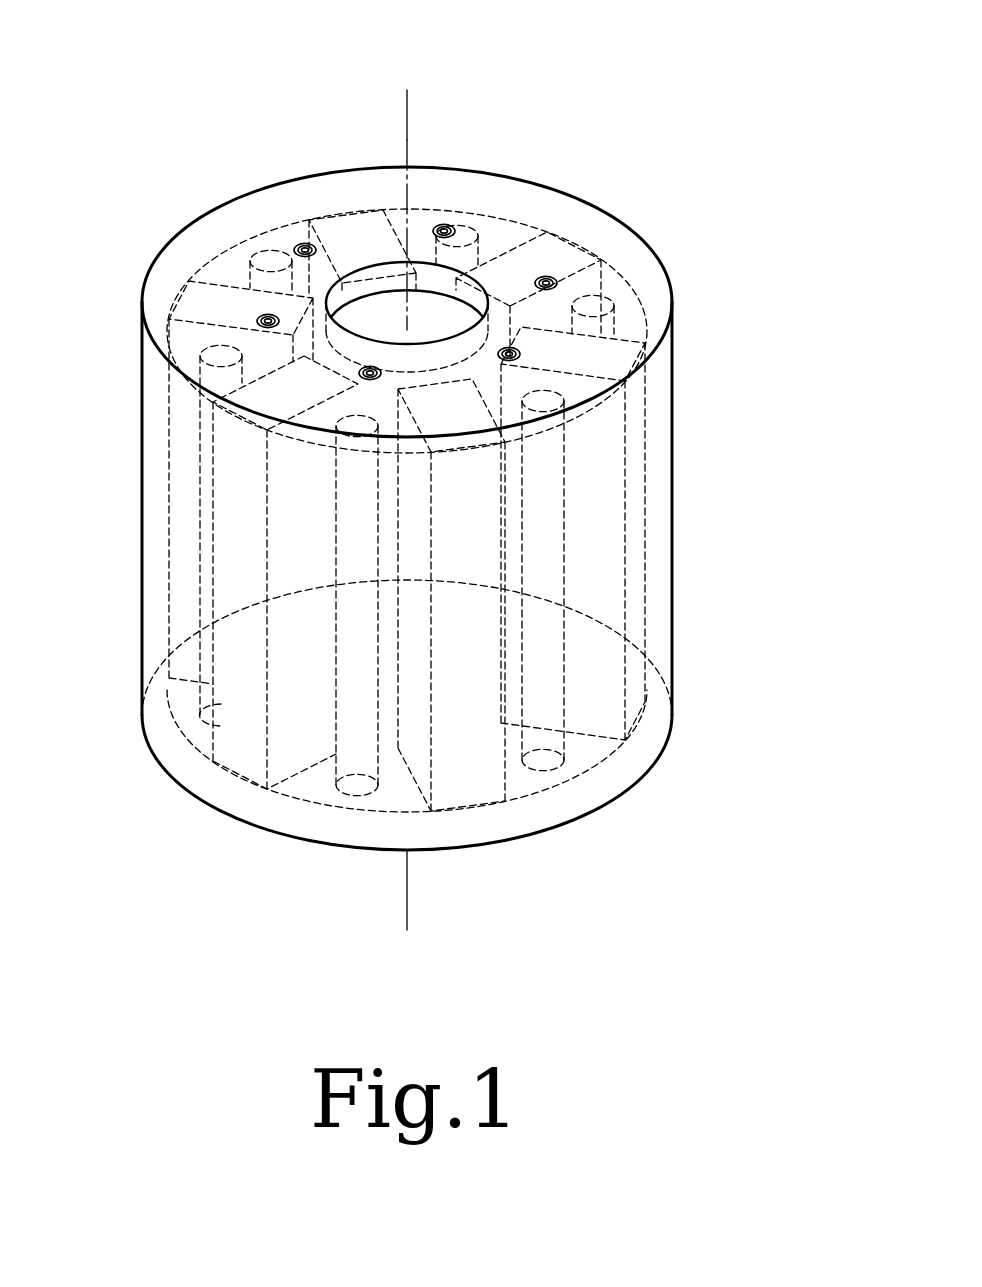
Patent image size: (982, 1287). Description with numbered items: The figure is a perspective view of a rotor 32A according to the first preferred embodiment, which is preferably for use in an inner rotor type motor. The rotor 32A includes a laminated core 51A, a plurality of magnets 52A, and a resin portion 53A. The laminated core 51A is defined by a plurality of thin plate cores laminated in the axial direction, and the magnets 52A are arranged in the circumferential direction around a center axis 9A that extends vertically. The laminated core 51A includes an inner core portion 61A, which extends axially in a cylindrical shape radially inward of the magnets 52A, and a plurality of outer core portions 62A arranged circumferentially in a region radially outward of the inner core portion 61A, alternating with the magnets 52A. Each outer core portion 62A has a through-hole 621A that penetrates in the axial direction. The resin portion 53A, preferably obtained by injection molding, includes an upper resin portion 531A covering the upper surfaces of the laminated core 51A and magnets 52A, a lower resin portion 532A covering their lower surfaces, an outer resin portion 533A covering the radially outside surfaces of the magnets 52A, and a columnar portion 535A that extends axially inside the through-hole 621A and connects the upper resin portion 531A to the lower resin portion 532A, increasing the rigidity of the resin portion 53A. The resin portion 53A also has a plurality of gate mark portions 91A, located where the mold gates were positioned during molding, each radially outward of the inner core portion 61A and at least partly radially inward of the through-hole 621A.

The rotor 32A is at (369, 110).
The center axis 9A is at (410, 114).
The resin portion 53A is at (127, 528).
The upper resin portion 531A is at (487, 208).
The lower resin portion 532A is at (470, 858).
The outer resin portion 533A is at (660, 518).
The columnar portion 535A is at (548, 620).
The magnet 52A is at (543, 258).
The laminated core 51A is at (345, 140).
The inner core portion 61A is at (340, 224).
The outer core portion 62A is at (256, 246).
The through-hole 621A is at (218, 345).
The gate mark portion 91A is at (552, 283).